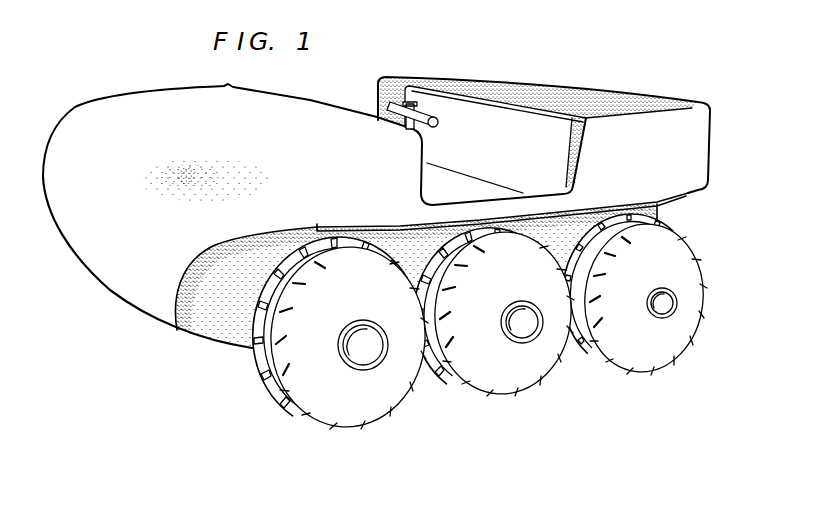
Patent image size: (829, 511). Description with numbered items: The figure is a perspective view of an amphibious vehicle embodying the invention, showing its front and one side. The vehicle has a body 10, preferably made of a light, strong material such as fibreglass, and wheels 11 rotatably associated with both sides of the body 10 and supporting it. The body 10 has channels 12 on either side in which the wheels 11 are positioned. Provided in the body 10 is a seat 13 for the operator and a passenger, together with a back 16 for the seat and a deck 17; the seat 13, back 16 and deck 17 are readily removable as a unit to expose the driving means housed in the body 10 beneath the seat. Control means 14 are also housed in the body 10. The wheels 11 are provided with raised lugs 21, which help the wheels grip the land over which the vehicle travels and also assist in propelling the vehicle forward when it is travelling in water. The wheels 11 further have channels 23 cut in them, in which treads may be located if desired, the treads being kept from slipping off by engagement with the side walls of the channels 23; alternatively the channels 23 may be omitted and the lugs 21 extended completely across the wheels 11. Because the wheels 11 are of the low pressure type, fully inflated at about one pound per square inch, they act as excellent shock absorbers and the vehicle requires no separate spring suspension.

The body 10 is at (170, 76).
The wheels 11 is at (469, 322).
The channels 12 is at (233, 297).
The seat 13 is at (458, 180).
The control means 14 is at (403, 102).
The back 16 is at (504, 117).
The deck 17 is at (577, 105).
The raised lugs 21 is at (302, 377).
The channels 23 is at (450, 255).